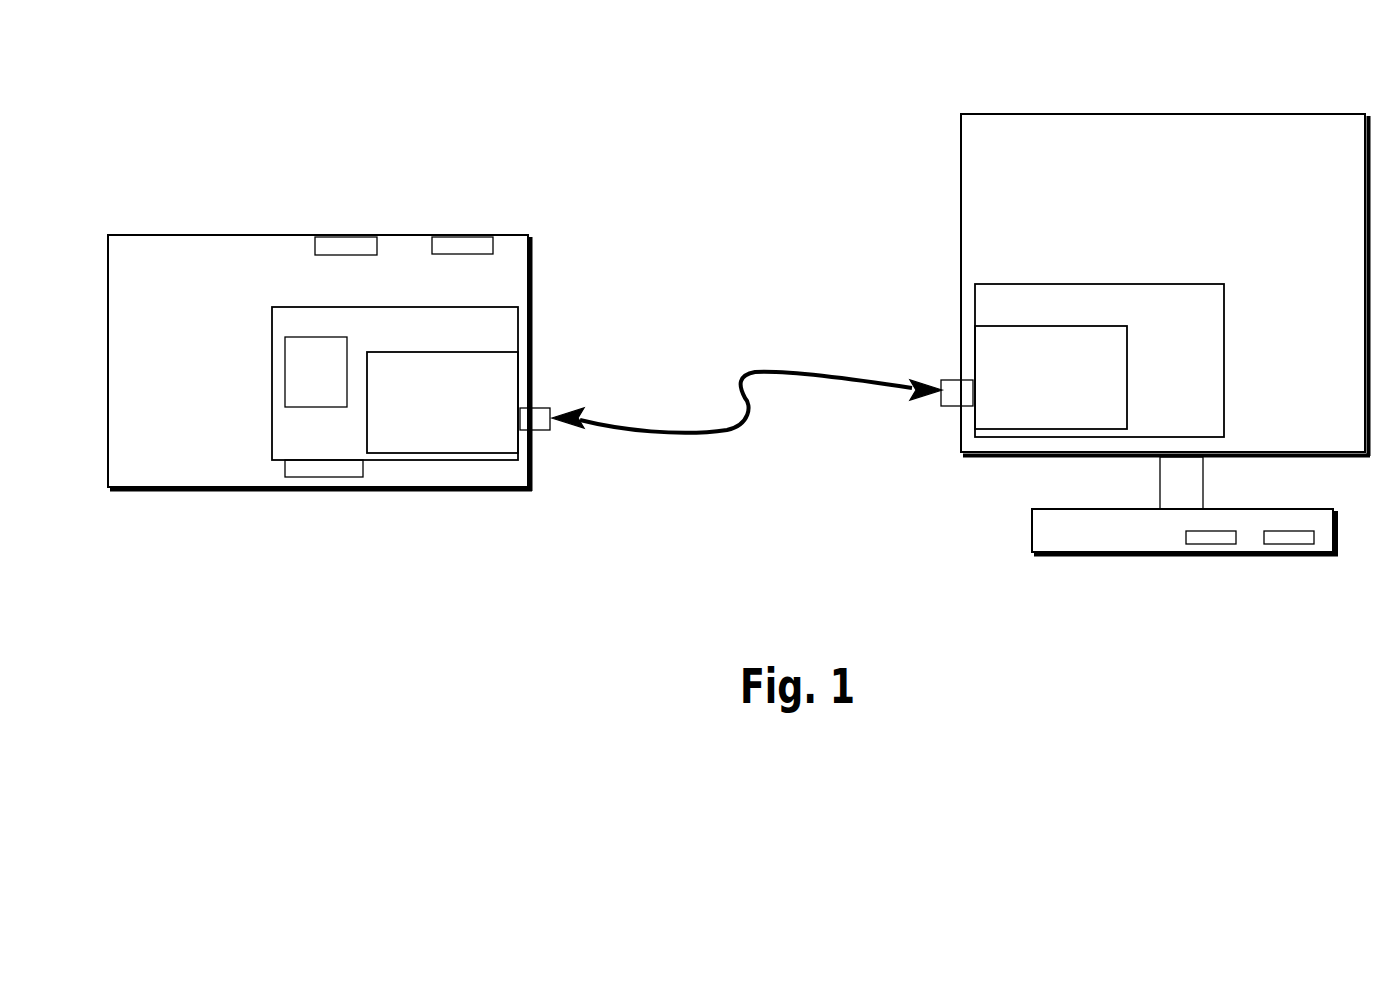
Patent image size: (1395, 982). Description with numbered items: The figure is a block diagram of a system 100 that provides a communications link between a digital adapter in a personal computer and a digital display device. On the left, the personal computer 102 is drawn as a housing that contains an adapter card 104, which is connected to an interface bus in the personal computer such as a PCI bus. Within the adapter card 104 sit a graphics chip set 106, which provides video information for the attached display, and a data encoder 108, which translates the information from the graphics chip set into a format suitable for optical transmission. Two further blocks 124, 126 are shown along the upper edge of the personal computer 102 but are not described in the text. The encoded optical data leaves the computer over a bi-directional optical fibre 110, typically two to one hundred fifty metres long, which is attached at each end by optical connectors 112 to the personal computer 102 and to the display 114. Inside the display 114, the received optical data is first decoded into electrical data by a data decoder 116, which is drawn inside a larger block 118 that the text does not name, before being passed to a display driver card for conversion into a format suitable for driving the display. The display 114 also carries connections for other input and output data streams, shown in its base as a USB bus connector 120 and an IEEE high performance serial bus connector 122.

The system 100 is at (740, 49).
The personal computer 102 is at (181, 281).
The adapter card 104 is at (270, 443).
The graphics chip set 106 is at (343, 378).
The data encoder 108 is at (442, 445).
The bi-directional optical fibre 110 is at (760, 372).
The optical connectors 112 is at (547, 407).
The display 114 is at (961, 166).
The data decoder 116 is at (998, 413).
The host processor 118 is at (1133, 285).
The USB bus connector 120 is at (1204, 537).
The IEEE 1394 serial bus connector 122 is at (1286, 537).
The button 124 is at (345, 240).
The button 126 is at (467, 240).